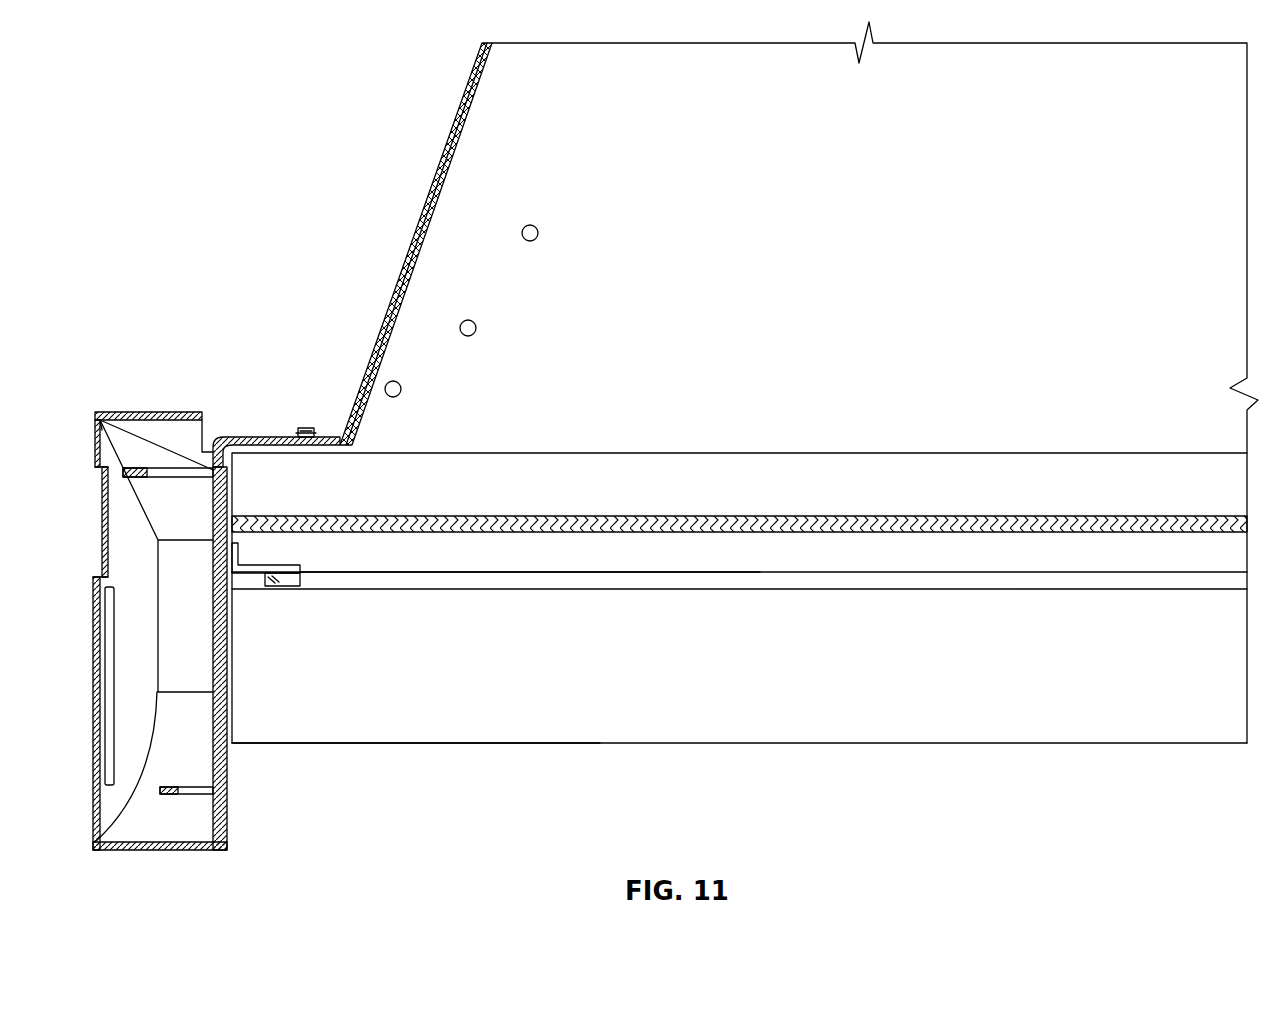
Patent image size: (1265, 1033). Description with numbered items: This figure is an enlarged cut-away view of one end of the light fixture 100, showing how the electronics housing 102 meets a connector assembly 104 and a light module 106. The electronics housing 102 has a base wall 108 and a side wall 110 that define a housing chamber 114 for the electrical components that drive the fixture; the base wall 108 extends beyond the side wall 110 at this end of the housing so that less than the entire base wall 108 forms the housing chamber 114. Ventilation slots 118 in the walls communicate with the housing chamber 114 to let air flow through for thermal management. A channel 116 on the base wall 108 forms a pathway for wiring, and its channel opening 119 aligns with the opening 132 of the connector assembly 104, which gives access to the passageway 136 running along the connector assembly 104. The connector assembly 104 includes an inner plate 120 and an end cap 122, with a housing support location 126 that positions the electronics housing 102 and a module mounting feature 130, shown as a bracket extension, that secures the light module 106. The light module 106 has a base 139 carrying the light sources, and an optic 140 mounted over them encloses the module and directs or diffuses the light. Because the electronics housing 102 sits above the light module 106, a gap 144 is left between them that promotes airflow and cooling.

The light fixture 100 is at (248, 247).
The electronics housing 102 is at (1027, 60).
The connector assembly 104 is at (165, 410).
The light module 106 is at (1060, 590).
The base wall 108 is at (255, 436).
The side wall 110 is at (490, 125).
The housing chamber 114 is at (418, 272).
The channel 116 is at (647, 472).
The ventilation slots 118 is at (481, 75).
The channel opening 119 is at (95, 417).
The inner plate 120 is at (222, 822).
The end cap 122 is at (160, 826).
The housing support location 126 is at (297, 428).
The module mounting feature 130 is at (272, 574).
The opening 132 is at (213, 483).
The passageway 136 is at (177, 748).
The base 139 is at (941, 577).
The optic 140 is at (583, 745).
The gap 144 is at (762, 548).